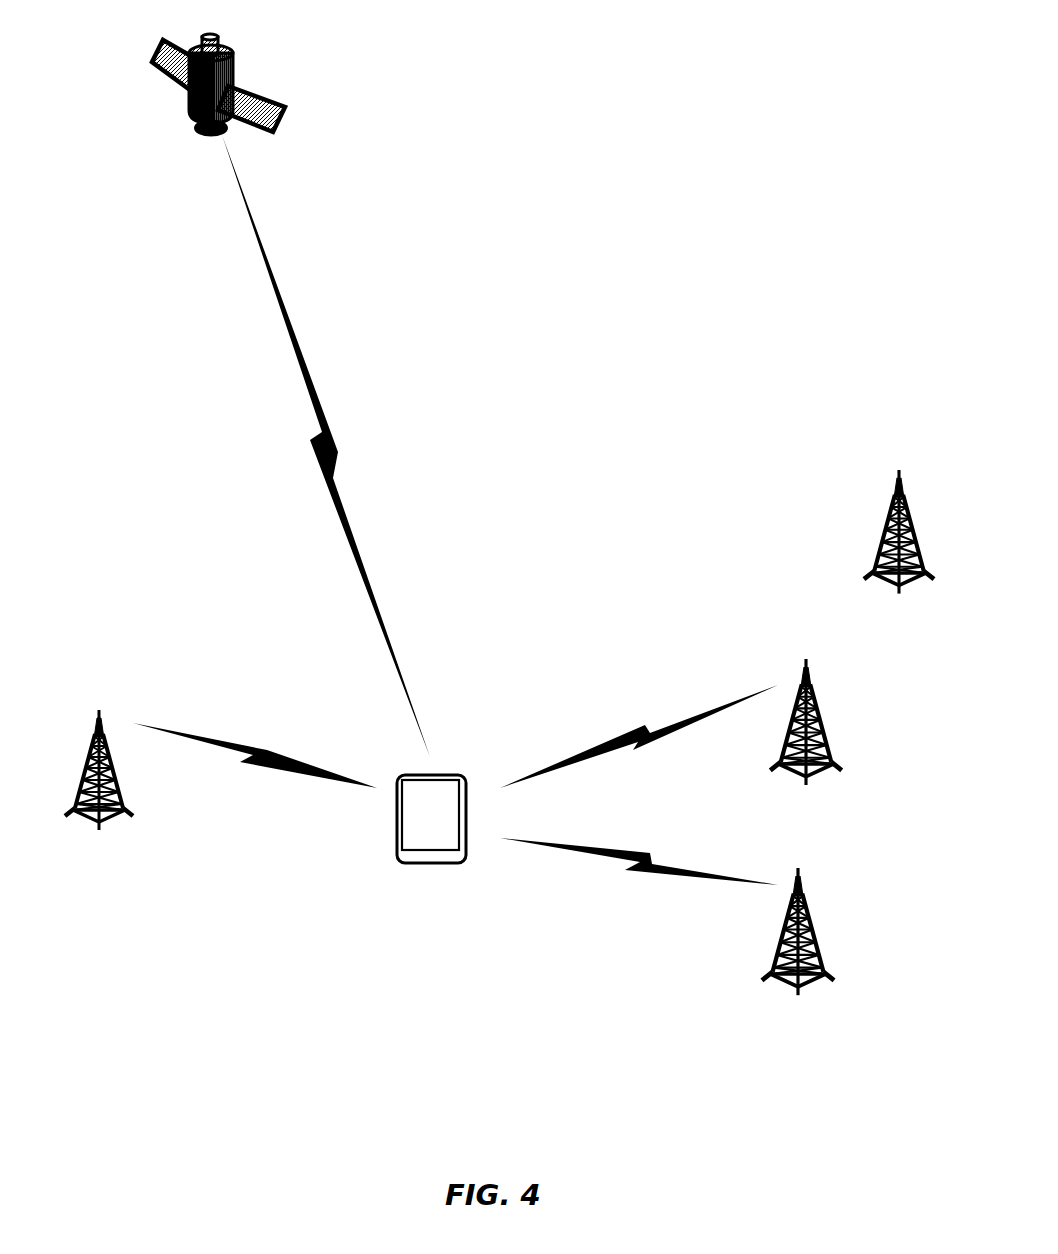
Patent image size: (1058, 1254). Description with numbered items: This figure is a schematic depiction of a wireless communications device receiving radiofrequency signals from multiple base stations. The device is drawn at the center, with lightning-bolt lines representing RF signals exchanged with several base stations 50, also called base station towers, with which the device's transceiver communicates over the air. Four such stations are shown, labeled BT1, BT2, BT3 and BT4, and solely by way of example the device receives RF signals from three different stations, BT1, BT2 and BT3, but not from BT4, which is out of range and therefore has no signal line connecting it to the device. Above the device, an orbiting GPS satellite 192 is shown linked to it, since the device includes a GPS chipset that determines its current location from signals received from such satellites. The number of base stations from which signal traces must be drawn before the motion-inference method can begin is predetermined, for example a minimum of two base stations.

The orbiting GPS satellites 192 is at (283, 132).
The base station 50 is at (499, 750).
The first base station BT1 is at (99, 791).
The second base station BT2 is at (798, 949).
The third base station BT3 is at (805, 736).
The fourth base station BT4 is at (899, 554).